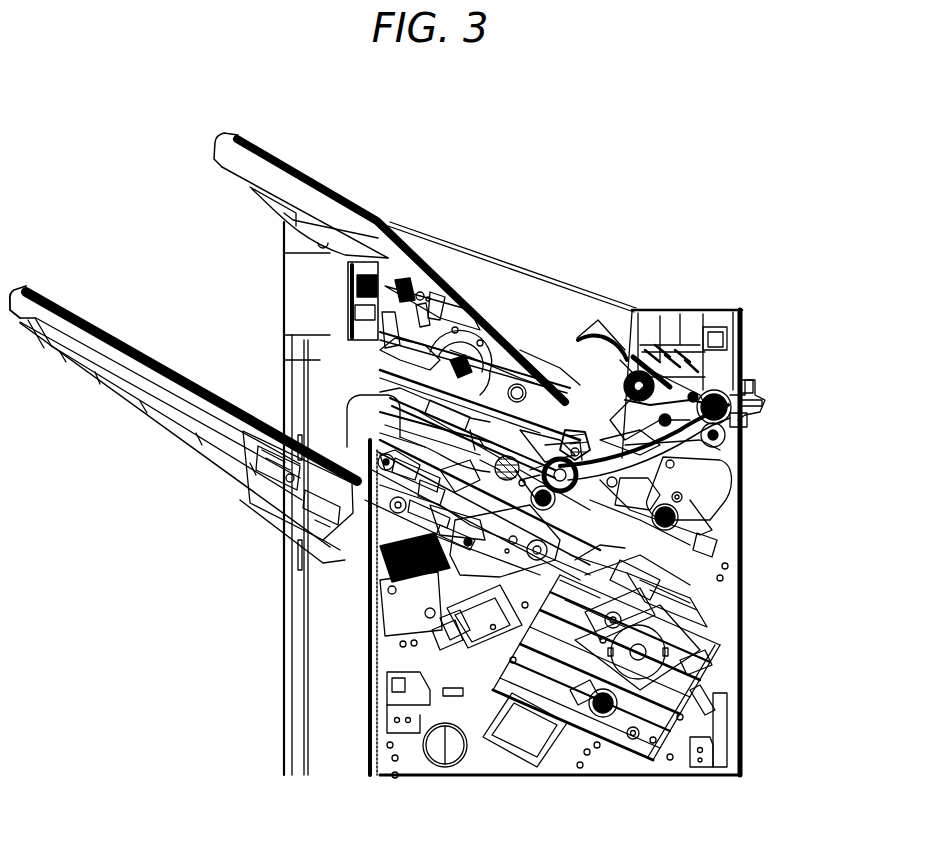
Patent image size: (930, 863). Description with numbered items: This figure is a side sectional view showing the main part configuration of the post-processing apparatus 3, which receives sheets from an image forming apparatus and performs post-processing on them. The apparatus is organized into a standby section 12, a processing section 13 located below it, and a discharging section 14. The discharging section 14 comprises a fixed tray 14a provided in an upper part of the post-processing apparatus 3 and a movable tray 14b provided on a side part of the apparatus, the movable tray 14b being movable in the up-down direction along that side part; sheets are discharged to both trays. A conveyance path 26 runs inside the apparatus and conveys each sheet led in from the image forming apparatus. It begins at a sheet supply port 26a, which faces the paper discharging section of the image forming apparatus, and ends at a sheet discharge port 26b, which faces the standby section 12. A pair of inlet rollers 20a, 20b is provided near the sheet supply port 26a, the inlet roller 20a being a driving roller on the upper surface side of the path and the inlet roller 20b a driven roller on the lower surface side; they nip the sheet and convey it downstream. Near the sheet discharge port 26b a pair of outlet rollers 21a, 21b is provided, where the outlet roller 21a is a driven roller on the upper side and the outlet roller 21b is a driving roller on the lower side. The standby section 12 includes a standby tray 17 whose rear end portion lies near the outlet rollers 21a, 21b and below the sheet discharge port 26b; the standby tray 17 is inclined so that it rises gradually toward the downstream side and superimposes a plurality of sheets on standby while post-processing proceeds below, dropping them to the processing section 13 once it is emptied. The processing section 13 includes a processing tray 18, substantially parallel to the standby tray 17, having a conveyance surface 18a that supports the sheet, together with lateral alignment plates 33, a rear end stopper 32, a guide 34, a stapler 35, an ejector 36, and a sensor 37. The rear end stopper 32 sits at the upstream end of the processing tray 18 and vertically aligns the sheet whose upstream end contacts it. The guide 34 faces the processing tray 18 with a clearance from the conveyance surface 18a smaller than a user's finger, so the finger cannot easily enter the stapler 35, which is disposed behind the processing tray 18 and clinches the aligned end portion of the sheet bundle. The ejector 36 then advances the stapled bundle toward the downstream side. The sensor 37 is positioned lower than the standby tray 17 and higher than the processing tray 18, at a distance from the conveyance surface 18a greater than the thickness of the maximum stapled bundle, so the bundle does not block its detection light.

The post-processing apparatus 3 is at (658, 164).
The standby section 12 is at (490, 407).
The processing section 13 is at (499, 588).
The discharging section 14 is at (178, 135).
The fixed tray 14a is at (272, 150).
The movable tray 14b is at (70, 298).
The standby tray 17 is at (450, 410).
The processing tray 18 is at (477, 452).
The conveyance surface 18a is at (400, 437).
The inlet roller 20a is at (767, 407).
The inlet roller 20b is at (718, 444).
The outlet roller 21a is at (565, 425).
The outlet roller 21b is at (577, 440).
The conveyance path 26 is at (687, 437).
The sheet supply port 26a is at (763, 409).
The sheet discharge port 26b is at (600, 473).
The rear end stopper 32 is at (637, 570).
The lateral alignment plates 33 is at (353, 420).
The guide 34 is at (505, 505).
The stapler 35 is at (625, 540).
The ejector 36 is at (637, 647).
The sensor 37 is at (512, 457).